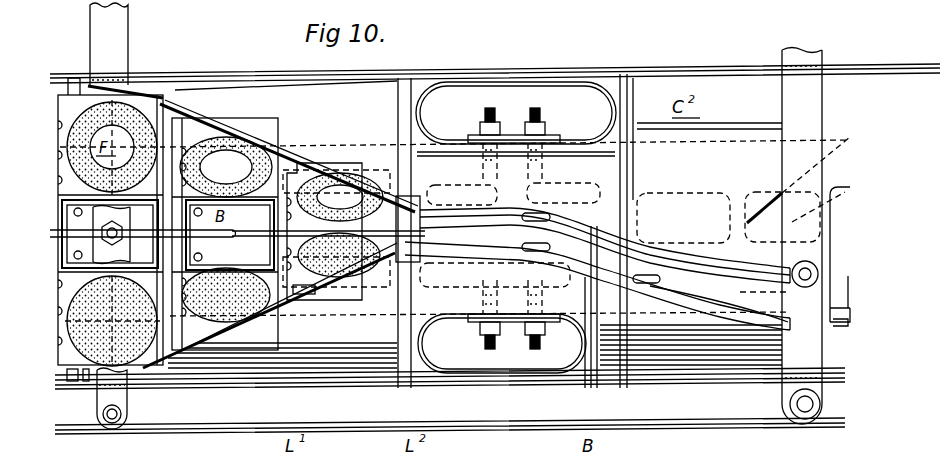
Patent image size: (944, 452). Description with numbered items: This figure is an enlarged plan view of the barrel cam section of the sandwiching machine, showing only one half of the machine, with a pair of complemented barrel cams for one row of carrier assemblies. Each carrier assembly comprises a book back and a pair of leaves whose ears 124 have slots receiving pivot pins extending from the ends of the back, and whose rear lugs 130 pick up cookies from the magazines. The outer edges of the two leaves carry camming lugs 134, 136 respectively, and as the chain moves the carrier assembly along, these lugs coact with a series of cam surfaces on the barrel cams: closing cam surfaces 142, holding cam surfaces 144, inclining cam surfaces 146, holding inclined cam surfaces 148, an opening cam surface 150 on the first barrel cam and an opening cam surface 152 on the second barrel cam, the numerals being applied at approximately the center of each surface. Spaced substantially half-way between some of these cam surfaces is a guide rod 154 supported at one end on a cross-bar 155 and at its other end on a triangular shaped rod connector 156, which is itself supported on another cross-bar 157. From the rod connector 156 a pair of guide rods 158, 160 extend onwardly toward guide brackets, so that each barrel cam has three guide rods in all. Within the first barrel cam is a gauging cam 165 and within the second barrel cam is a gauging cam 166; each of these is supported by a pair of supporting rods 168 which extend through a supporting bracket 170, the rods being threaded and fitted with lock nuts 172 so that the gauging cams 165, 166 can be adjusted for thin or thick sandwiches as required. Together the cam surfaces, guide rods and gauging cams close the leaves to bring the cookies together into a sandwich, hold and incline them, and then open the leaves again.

The ears 124 is at (258, 238).
The rear lugs 130 is at (70, 127).
The camming lug 134 is at (687, 287).
The camming lug 136 is at (192, 128).
The closing cam surfaces 142 is at (262, 136).
The holding cam surfaces 144 is at (464, 250).
The inclining cam surfaces 146 is at (572, 234).
The holding inclined cam surfaces 148 is at (617, 282).
The opening cam surface of C1 150 is at (780, 334).
The opening cam surface of C2 152 is at (781, 192).
The guide rod 154 is at (410, 197).
The cross-bar 155 is at (118, 52).
The rod connector 156 is at (772, 283).
The cross-bar 157 is at (797, 103).
The guide rod 158 is at (840, 330).
The guide rod 160 is at (845, 185).
The gauging cam 165 is at (440, 282).
The gauging cam 166 is at (556, 188).
The supporting rods 168 is at (545, 108).
The supporting bracket 170 is at (556, 136).
The lock nuts 172 is at (545, 124).